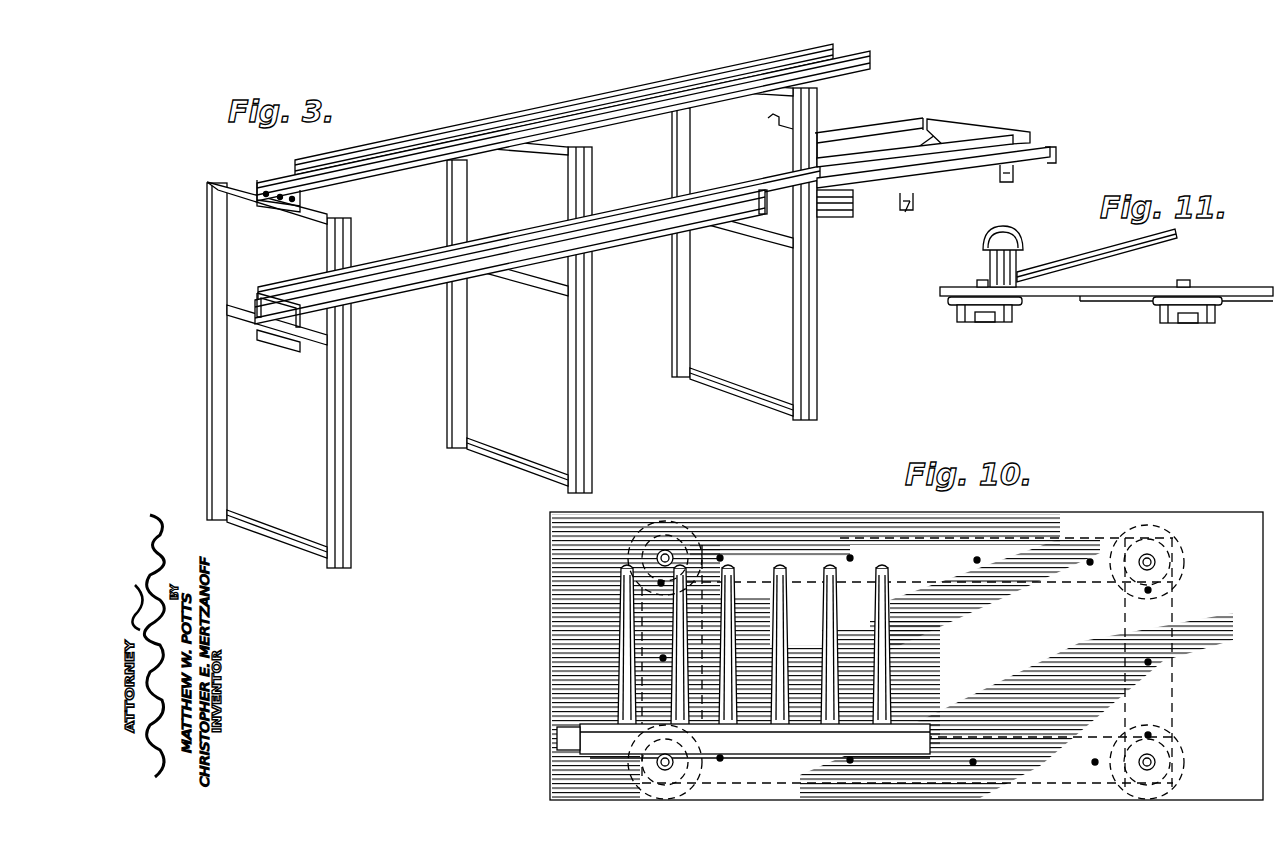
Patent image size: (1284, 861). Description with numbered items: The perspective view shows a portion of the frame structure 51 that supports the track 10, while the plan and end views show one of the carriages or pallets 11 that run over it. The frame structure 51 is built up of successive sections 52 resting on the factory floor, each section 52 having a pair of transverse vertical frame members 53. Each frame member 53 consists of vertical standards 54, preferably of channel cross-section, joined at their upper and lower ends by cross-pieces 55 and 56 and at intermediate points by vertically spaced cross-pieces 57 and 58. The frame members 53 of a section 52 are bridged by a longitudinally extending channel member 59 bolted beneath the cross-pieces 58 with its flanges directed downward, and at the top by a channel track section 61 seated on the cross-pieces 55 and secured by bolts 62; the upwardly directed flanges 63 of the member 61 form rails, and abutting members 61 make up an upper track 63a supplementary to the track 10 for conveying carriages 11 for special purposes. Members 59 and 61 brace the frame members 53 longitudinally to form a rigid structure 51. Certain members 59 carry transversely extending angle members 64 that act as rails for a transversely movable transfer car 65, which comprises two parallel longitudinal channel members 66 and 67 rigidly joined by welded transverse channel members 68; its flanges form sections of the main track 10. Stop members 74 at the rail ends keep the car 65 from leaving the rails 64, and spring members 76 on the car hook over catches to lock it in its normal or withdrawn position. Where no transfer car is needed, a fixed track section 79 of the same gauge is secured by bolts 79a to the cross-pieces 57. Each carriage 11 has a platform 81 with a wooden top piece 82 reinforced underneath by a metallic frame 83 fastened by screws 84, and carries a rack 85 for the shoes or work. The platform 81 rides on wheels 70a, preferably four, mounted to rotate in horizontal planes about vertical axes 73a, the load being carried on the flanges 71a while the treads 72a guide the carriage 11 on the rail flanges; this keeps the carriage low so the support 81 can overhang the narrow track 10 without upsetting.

In FIG. 3, the track 10 is at (616, 199).
In FIG. 11, the carriage 11 is at (1192, 271).
In FIG. 10, the carriage 11 is at (538, 668).
In FIG. 3, the frame structure 51 is at (287, 465).
In FIG. 3, the section 52 is at (356, 141).
In FIG. 3, the vertical frame member 53 is at (333, 410).
In FIG. 3, the vertical standard 54 is at (207, 458).
In FIG. 3, the upper cross-piece 55 is at (310, 210).
In FIG. 3, the lower cross-piece 56 is at (273, 530).
In FIG. 3, the intermediate cross-piece 57 is at (240, 297).
In FIG. 3, the intermediate cross-piece 58 is at (235, 320).
In FIG. 3, the longitudinally extending member 59 is at (290, 352).
In FIG. 3, the track section 61 is at (407, 150).
In FIG. 3, the bolt 62 is at (270, 198).
In FIG. 3, the upwardly directed flange 63 is at (293, 180).
In FIG. 3, the upper track 63a is at (527, 102).
In FIG. 3, the angle member 64 is at (778, 128).
In FIG. 3, the transfer car 65 is at (953, 186).
In FIG. 3, the longitudinal channel member 66 is at (933, 130).
In FIG. 3, the longitudinal channel member 67 is at (1052, 153).
In FIG. 3, the transverse channel member 68 is at (968, 132).
In FIG. 11, the wheel 70a is at (970, 318).
In FIG. 10, the wheel 70a is at (672, 535).
In FIG. 11, the flange 71a is at (1010, 303).
In FIG. 11, the tread 72a is at (1013, 316).
In FIG. 11, the vertical axis 73a is at (1190, 283).
In FIG. 3, the stop member 74 is at (907, 212).
In FIG. 3, the spring member 76 is at (913, 203).
In FIG. 3, the fixed track section 79 is at (412, 250).
In FIG. 3, the bolt 79a is at (280, 293).
In FIG. 11, the platform 81 is at (1240, 296).
In FIG. 10, the platform 81 is at (833, 538).
In FIG. 11, the wooden top piece 82 is at (1130, 288).
In FIG. 10, the wooden top piece 82 is at (1080, 518).
In FIG. 11, the metallic frame 83 is at (1103, 301).
In FIG. 10, the metallic frame 83 is at (1027, 540).
In FIG. 11, the screw 84 is at (1083, 291).
In FIG. 10, the screw 84 is at (1146, 592).
In FIG. 11, the rack 85 is at (988, 268).
In FIG. 10, the rack 85 is at (613, 738).